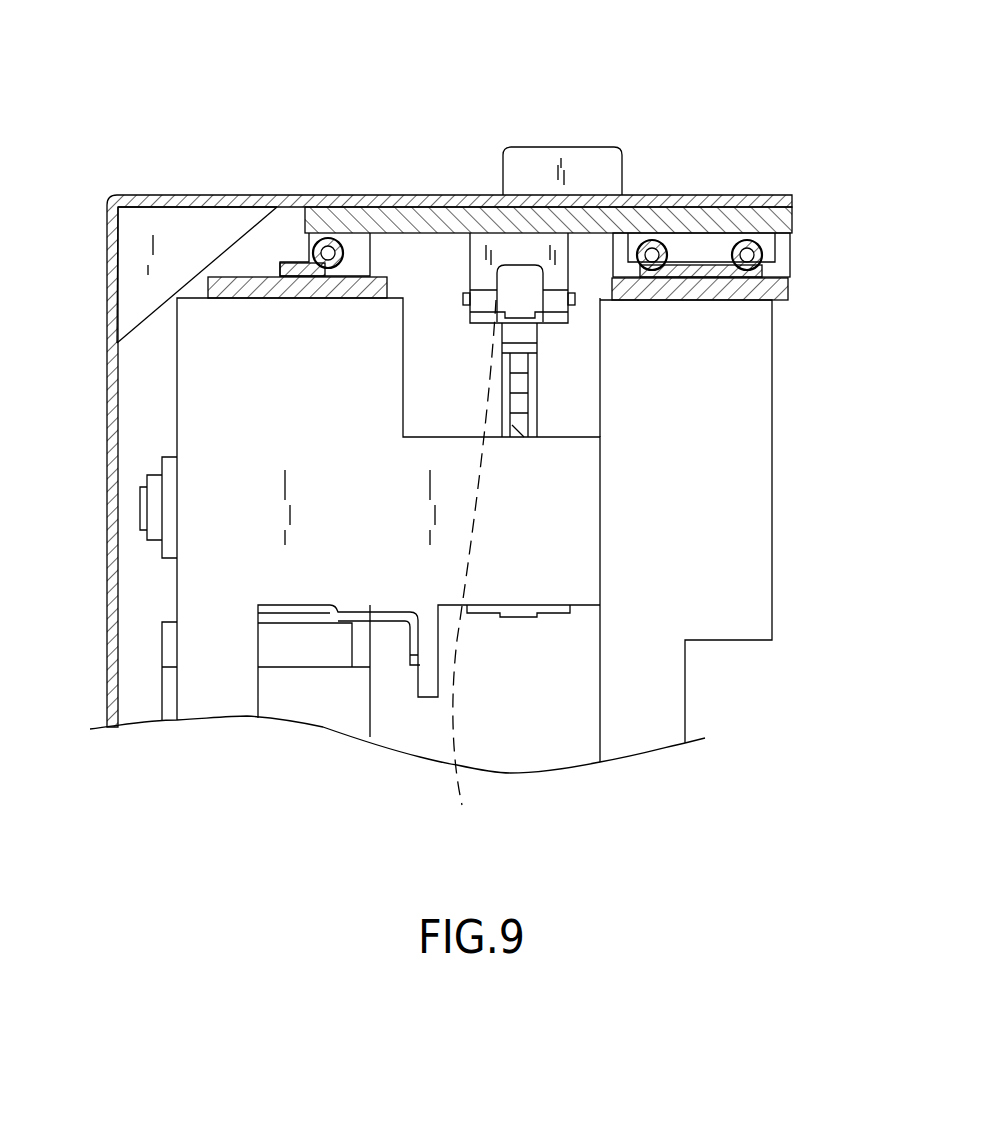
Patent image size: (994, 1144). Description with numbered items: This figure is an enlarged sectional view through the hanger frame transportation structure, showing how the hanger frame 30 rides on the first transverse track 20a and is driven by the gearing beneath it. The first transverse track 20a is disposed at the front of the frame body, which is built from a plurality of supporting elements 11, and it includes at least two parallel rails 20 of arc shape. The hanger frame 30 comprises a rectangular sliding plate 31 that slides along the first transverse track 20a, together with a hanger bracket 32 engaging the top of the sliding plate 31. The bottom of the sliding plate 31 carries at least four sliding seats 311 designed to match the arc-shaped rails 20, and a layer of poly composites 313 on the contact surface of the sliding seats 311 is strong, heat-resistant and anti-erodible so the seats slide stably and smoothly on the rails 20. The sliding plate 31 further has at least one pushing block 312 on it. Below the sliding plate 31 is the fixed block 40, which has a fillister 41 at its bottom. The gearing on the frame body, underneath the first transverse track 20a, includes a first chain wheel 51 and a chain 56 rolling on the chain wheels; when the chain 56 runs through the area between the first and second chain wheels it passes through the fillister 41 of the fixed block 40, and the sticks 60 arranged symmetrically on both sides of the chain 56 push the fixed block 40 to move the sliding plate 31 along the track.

The supporting element 11 is at (743, 300).
The rail 20 is at (449, 365).
The first transverse track 20a is at (732, 193).
The hanger frame 30 is at (417, 365).
The sliding plate 31 is at (544, 176).
The sliding seat 311 is at (778, 252).
The pushing block 312 is at (503, 172).
The layer of poly composites 313 is at (747, 240).
The hanger bracket 32 is at (106, 448).
The fixed block 40 is at (557, 265).
The fillister 41 is at (525, 275).
The first chain wheel 51 is at (523, 433).
The chain 56 is at (523, 333).
The stick 60 is at (473, 567).